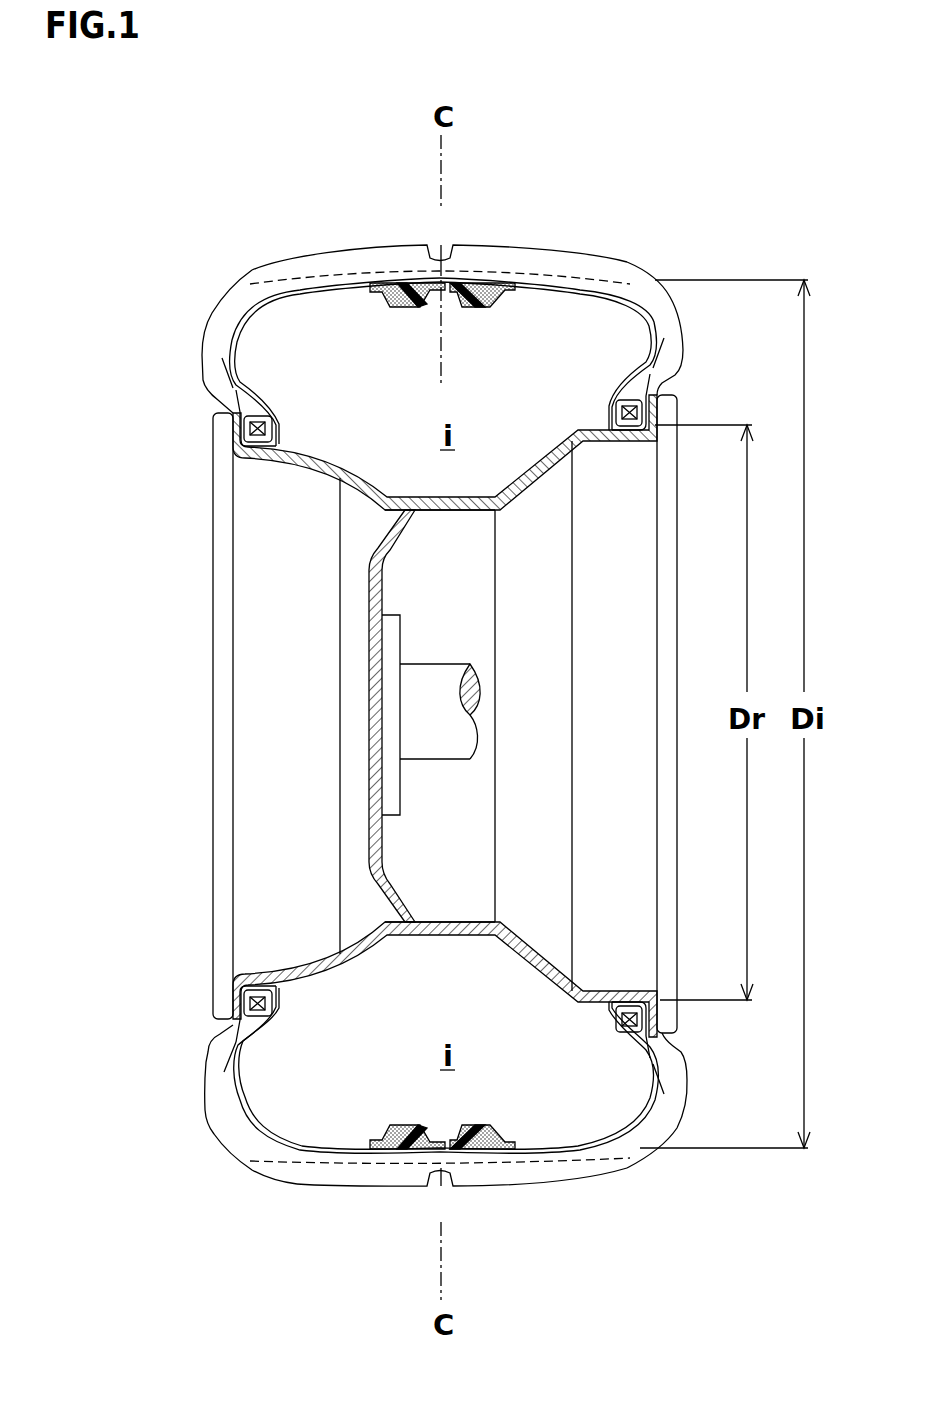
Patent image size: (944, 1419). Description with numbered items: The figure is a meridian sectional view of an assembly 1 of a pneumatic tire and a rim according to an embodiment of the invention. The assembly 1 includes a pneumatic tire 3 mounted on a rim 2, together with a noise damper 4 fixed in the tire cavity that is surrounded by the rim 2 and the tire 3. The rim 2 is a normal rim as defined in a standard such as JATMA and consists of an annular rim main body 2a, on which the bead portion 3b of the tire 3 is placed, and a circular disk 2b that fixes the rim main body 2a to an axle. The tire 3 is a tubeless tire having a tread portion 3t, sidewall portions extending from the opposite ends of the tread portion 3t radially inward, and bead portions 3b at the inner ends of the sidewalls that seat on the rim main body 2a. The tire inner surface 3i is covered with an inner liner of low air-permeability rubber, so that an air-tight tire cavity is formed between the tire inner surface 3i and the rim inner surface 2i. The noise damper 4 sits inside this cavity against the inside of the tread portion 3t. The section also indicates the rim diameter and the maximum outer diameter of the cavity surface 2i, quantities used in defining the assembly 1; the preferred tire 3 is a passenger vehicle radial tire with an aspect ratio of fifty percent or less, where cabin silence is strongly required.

The assembly of a pneumatic tire and a rim 1 is at (618, 216).
The rim 2 is at (112, 512).
The rim main body 2a is at (305, 463).
The disk 2b is at (362, 600).
The rim inner surface 2i is at (437, 932).
The pneumatic tire 3 is at (206, 284).
The tread portion 3t is at (475, 243).
The bead portion 3b is at (655, 406).
The tire inner surface 3i is at (243, 1113).
The noise damper 4 is at (383, 290).